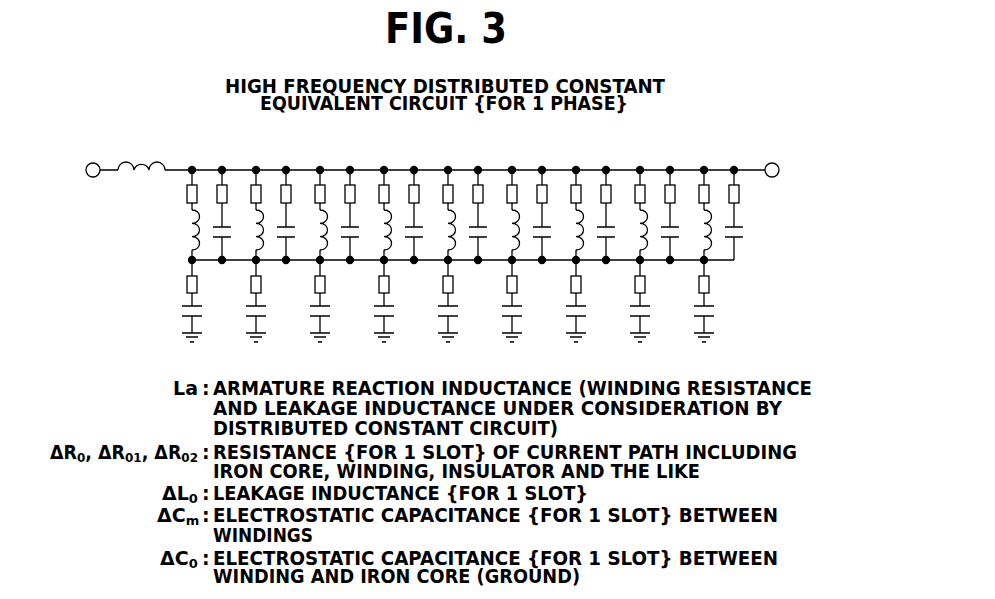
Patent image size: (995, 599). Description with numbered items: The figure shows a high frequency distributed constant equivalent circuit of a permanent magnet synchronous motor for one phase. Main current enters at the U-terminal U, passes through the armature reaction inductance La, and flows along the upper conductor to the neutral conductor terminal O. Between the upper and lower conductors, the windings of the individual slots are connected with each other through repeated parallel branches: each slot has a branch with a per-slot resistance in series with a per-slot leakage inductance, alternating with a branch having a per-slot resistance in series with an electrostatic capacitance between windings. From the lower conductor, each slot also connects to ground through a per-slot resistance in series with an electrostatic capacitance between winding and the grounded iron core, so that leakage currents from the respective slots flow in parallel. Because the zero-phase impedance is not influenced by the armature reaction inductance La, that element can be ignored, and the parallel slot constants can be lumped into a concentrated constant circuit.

The U-terminal U is at (92, 163).
The neutral conductor terminal O is at (773, 161).
The armature reaction inductance La is at (124, 161).